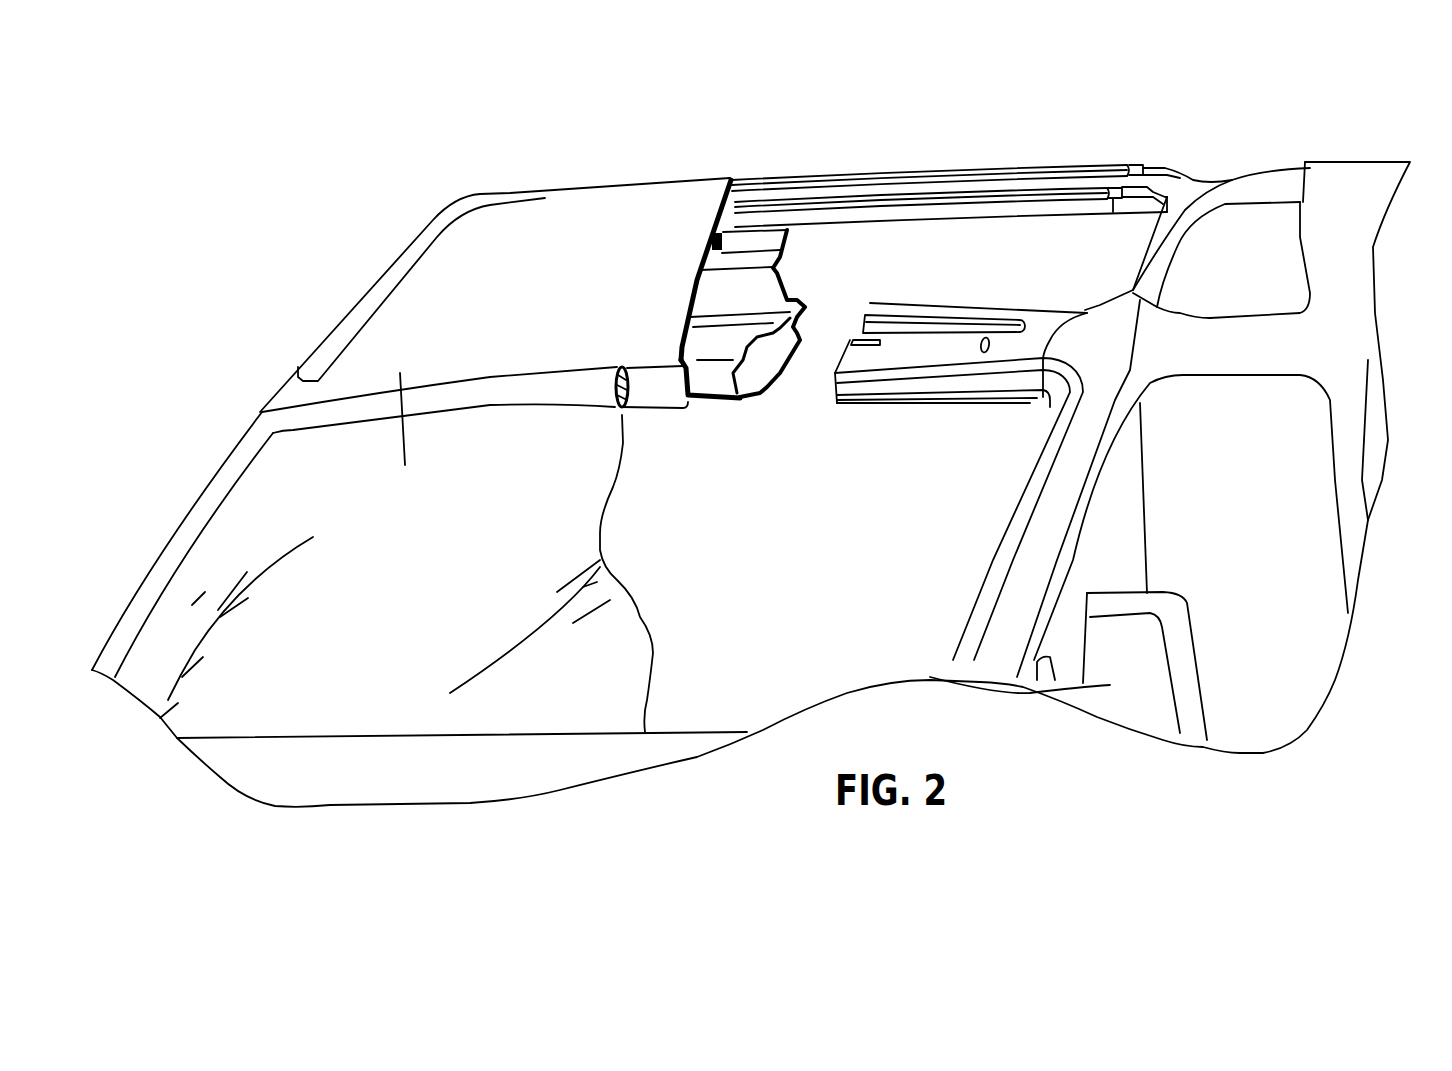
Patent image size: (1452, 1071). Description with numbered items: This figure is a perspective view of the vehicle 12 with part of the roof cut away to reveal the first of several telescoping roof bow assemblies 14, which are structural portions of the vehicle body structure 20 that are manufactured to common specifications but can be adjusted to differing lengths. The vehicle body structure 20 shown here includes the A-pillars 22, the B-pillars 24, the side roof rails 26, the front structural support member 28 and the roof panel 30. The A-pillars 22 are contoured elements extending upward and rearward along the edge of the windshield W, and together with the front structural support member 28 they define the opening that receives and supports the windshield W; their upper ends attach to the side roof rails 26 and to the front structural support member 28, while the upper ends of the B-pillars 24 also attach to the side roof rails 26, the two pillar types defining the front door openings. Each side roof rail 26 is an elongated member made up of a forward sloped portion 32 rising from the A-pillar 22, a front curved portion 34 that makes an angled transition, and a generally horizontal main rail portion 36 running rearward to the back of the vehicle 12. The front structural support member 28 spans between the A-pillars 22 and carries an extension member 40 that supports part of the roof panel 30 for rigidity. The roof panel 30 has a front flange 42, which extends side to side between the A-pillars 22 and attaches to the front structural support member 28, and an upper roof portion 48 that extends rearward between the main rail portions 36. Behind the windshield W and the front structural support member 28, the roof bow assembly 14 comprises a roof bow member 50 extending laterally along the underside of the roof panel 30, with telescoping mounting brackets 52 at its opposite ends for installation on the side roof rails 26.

The vehicle 12 is at (543, 168).
The roof bow assembly 14 is at (893, 160).
The vehicle body structure 20 is at (1043, 112).
The A-pillar 22 is at (210, 505).
The B-pillar 24 is at (1365, 425).
The side roof rail 26 is at (1227, 155).
The front structural support member 28 is at (711, 352).
The roof panel 30 is at (667, 215).
The forward sloped portion 32 is at (1167, 258).
The front curved portion 34 is at (1203, 208).
The main rail portion 36 is at (1268, 188).
The extension member 40 is at (752, 288).
The front flange 42 is at (655, 387).
The upper roof portion 48 is at (1370, 160).
The roof bow member 50 is at (935, 232).
The telescoping mounting bracket 52 is at (1125, 217).
The windshield W is at (400, 404).